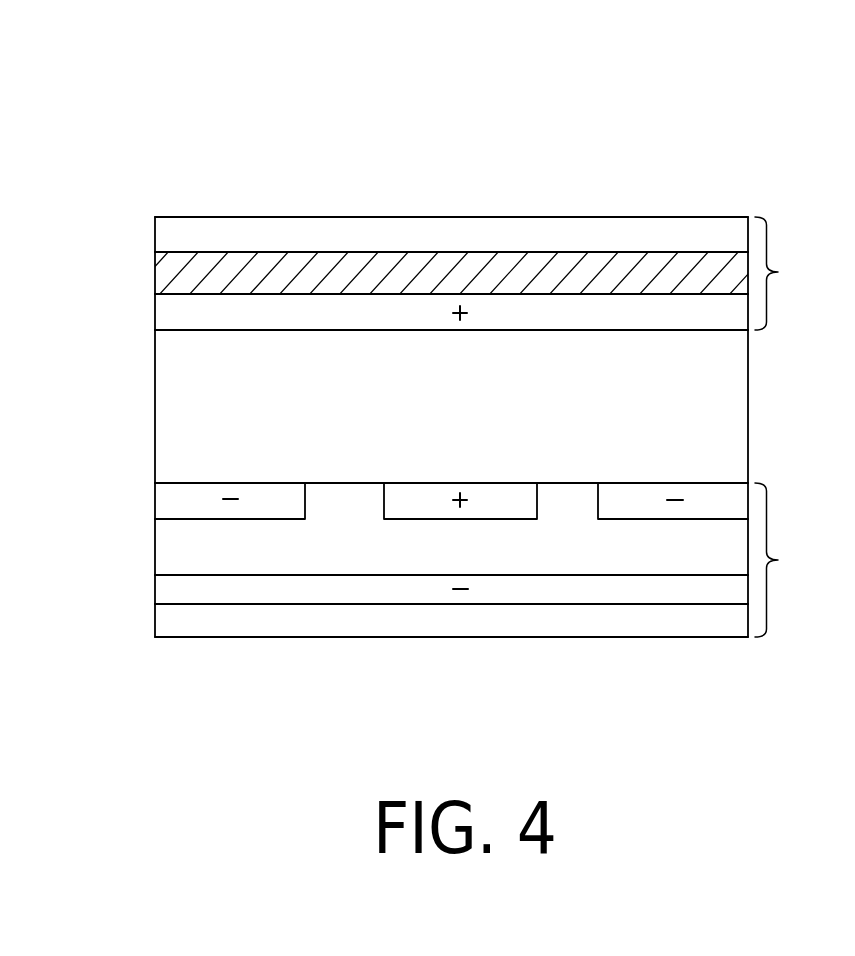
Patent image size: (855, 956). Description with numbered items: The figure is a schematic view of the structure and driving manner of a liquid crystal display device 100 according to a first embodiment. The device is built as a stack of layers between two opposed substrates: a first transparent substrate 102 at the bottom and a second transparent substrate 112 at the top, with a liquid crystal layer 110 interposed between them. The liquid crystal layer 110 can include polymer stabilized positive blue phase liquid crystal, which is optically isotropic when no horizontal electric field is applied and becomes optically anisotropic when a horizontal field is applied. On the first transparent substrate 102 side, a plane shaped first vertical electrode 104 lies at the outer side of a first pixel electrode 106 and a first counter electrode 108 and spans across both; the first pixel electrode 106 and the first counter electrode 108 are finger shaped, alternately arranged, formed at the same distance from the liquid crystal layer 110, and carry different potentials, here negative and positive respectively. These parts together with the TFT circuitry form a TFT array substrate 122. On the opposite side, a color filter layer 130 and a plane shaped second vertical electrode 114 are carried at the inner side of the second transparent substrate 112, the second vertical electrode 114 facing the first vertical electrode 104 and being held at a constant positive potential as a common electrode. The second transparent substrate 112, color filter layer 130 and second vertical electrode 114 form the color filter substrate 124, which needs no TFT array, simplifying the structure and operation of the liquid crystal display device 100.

The liquid crystal display device 100 is at (686, 128).
The first transparent substrate 102 is at (163, 623).
The first vertical electrode 104 is at (163, 588).
The first pixel electrode 106 is at (181, 504).
The first counter electrode 108 is at (513, 505).
The liquid crystal layer 110 is at (173, 403).
The second transparent substrate 112 is at (161, 233).
The second vertical electrode 114 is at (165, 319).
The TFT array substrate 122 is at (448, 600).
The color filter substrate 124 is at (448, 271).
The color filter layer 130 is at (161, 276).